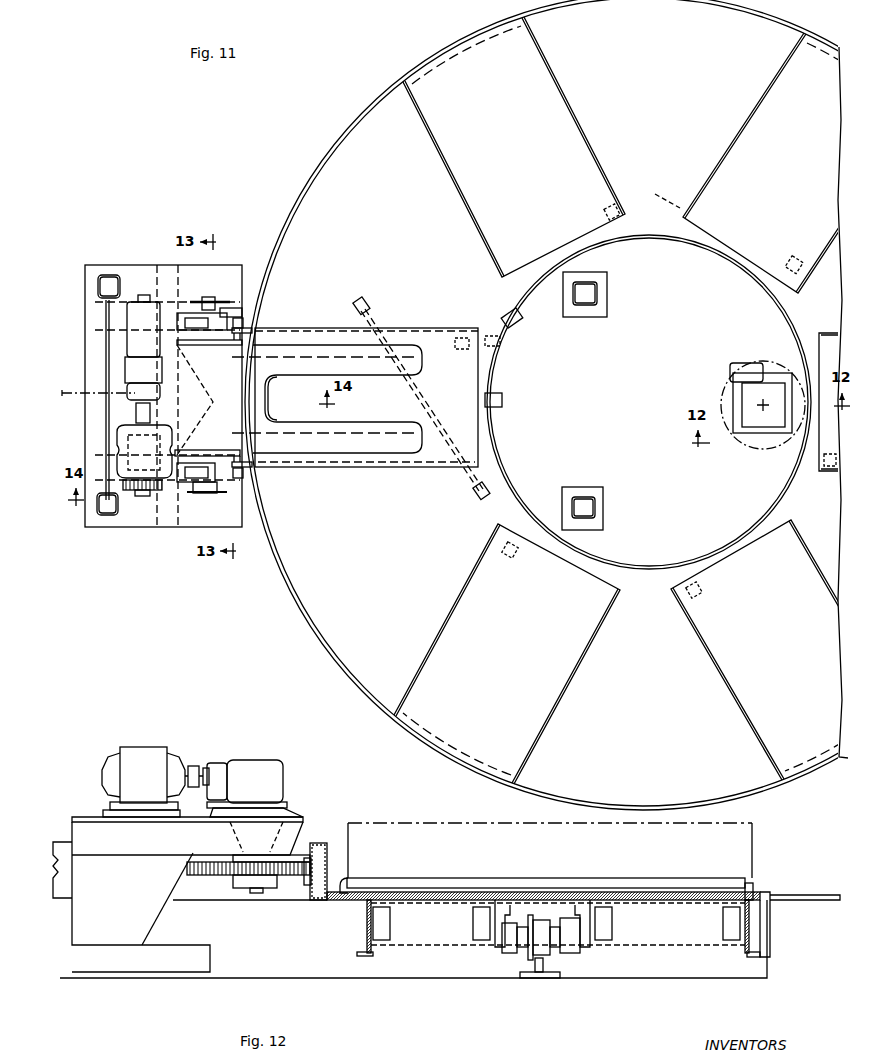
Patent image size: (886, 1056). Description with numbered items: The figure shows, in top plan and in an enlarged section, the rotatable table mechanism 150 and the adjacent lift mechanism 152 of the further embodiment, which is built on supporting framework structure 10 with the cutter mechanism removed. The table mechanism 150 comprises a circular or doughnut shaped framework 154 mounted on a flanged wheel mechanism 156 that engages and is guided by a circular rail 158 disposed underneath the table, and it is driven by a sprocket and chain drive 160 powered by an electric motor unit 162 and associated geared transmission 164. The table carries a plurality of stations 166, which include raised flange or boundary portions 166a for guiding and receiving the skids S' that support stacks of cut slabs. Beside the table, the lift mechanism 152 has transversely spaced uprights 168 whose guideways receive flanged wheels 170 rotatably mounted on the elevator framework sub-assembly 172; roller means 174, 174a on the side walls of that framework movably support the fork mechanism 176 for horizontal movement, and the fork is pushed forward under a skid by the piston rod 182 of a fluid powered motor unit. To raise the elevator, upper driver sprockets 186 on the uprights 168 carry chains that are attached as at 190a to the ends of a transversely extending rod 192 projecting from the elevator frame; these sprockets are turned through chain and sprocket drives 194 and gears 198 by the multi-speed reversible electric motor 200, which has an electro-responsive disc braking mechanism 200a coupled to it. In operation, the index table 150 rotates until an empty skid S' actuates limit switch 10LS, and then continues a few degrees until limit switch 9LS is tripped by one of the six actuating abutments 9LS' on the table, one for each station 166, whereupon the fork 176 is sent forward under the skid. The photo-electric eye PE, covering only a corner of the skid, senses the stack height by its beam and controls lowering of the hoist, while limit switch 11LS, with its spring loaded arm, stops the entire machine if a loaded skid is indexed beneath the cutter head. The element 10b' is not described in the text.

In FIG. 11, the rotatable table mechanism 150 is at (322, 172).
In FIG. 12, the rotatable table mechanism 150 is at (362, 914).
In FIG. 11, the lift mechanism 152 is at (212, 292).
In FIG. 11, the circular framework 154 is at (308, 618).
In FIG. 12, the circular framework 154 is at (381, 940).
In FIG. 12, the flanged wheel mechanism 156 is at (542, 946).
In FIG. 12, the circular rail 158 is at (536, 968).
In FIG. 11, the sprocket and chain drive 160 is at (786, 450).
In FIG. 12, the sprocket and chain drive 160 is at (298, 858).
In FIG. 11, the electric motor unit 162 is at (741, 365).
In FIG. 12, the electric motor unit 162 is at (146, 752).
In FIG. 11, the geared transmission 164 is at (752, 420).
In FIG. 12, the geared transmission 164 is at (253, 762).
In FIG. 11, the stations 166 is at (444, 335).
In FIG. 12, the stations 166 is at (381, 884).
In FIG. 11, the raised flange or boundary portions 166a is at (618, 200).
In FIG. 12, the raised flange or boundary portions 166a is at (347, 877).
In FIG. 11, the uprights 168 is at (196, 312).
In FIG. 11, the flanged wheels 170 is at (232, 318).
In FIG. 11, the framework sub-assembly 172 is at (246, 465).
In FIG. 11, the roller means 174 is at (232, 372).
In FIG. 11, the roller means 174a is at (212, 300).
In FIG. 11, the fork mechanism 176 is at (305, 350).
In FIG. 11, the piston rod 182 is at (70, 391).
In FIG. 11, the upper driver sprockets 186 is at (214, 318).
In FIG. 11, the chain attachment 190a is at (244, 320).
In FIG. 11, the transversely extending rod 192 is at (236, 408).
In FIG. 11, the chain and sprocket drives 194 is at (157, 268).
In FIG. 11, the gears 198 is at (130, 494).
In FIG. 11, the reversible electric motor 200 is at (127, 448).
In FIG. 11, the electro-responsive disc braking mechanism 200a is at (127, 370).
In FIG. 11, the supporting framework structure 10 is at (594, 314).
In FIG. 11, the carrier locating boss 10b' is at (362, 391).
In FIG. 11, the limit switch 9LS is at (509, 345).
In FIG. 11, the limit switch 10LS is at (516, 393).
In FIG. 11, the limit switch 11LS is at (533, 310).
In FIG. 11, the actuating abutment 9LS' is at (645, 394).
In FIG. 11, the photo-electric eye PE is at (421, 395).
In FIG. 11, the skid S' is at (645, 414).
In FIG. 12, the skid S' is at (774, 855).